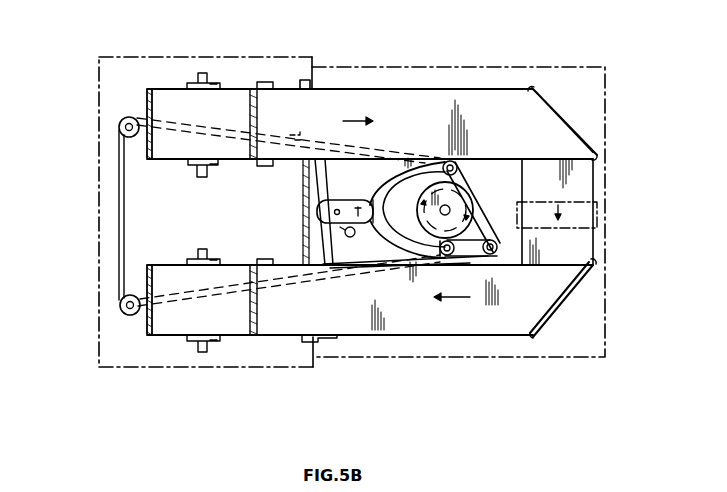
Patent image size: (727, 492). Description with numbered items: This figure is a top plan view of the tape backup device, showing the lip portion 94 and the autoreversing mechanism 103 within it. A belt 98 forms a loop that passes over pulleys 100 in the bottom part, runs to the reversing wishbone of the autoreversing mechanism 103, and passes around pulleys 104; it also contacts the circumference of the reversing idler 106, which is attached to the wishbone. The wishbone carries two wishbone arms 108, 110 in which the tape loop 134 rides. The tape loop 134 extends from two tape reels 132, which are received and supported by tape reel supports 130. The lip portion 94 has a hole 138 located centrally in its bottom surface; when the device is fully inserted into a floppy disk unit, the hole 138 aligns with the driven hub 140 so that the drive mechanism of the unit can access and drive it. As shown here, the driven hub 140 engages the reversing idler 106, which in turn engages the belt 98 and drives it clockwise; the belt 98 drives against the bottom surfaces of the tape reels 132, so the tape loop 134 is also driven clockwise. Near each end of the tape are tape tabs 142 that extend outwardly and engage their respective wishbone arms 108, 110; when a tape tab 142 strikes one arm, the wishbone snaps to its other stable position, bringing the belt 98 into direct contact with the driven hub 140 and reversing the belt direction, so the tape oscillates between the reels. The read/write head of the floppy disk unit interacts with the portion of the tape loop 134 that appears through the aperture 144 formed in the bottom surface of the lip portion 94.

The lip portion 94 is at (435, 67).
The belt 98 is at (387, 273).
The pulleys 100 is at (292, 136).
The autoreversing mechanism 103 is at (383, 158).
The pulleys 104 is at (450, 162).
The reversing idler 106 is at (444, 256).
The wishbone arm 108 is at (313, 67).
The wishbone arm 110 is at (325, 238).
The tape reel supports 130 is at (190, 83).
The tape reels 132 is at (146, 89).
The tape loop 134 is at (407, 318).
The hole 138 is at (507, 160).
The driven hub 140 is at (465, 206).
The tape tabs 142 is at (265, 82).
The aperture 144 is at (597, 212).